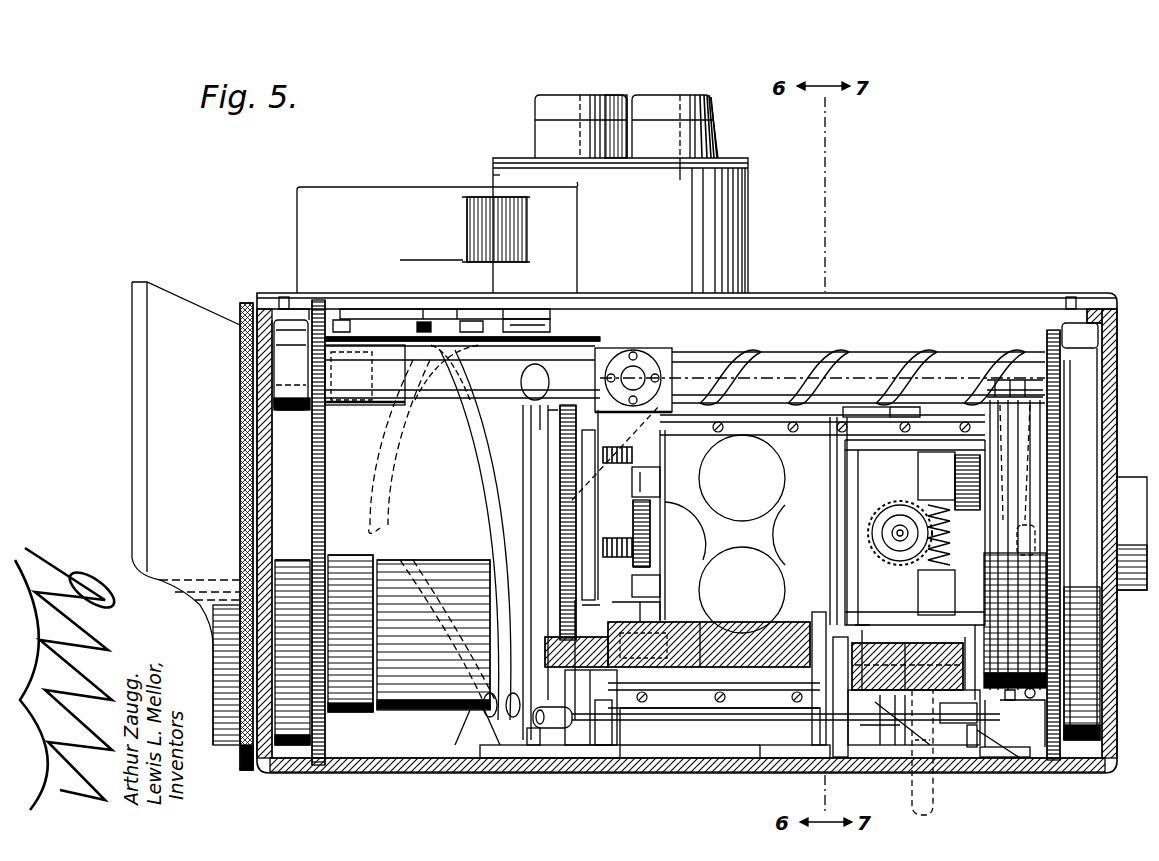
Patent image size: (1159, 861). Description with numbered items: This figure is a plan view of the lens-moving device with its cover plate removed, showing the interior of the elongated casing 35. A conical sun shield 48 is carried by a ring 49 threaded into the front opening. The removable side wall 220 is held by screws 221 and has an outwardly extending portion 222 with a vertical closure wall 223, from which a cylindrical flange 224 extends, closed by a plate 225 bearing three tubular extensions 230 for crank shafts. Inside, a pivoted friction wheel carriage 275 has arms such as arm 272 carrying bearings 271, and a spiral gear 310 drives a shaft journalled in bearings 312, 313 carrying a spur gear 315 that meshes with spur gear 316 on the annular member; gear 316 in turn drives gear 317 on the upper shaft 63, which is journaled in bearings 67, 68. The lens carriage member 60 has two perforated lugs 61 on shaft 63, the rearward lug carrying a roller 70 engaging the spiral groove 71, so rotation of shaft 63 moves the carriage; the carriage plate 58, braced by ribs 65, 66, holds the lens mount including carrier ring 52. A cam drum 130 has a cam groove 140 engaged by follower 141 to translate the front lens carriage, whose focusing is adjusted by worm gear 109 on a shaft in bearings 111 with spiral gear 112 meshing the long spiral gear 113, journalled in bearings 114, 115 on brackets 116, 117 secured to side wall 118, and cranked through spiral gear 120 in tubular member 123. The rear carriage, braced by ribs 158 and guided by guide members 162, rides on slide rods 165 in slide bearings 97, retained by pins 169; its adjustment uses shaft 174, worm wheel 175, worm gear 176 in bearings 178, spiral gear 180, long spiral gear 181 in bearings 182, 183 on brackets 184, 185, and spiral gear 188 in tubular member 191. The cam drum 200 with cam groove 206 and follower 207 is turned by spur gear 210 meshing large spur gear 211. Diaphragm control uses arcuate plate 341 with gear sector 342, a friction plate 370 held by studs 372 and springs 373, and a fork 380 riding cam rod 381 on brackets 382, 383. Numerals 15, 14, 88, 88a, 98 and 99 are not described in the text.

The elongated casing 35 is at (1103, 289).
The side wall 220 is at (852, 292).
The screws 221 is at (1088, 295).
The outwardly extending portion 222 is at (750, 247).
The vertical closure wall 223 is at (423, 187).
The cylindrical wall or annular flange 224 is at (493, 172).
The closure plate 225 is at (728, 158).
The tubular extensions 230 is at (706, 135).
The bearing 312 is at (462, 308).
The pivoted friction wheel carriage 275 is at (385, 310).
The bearing 313 is at (376, 308).
The spur gear 315 is at (370, 310).
The spiral gear 310 is at (415, 310).
The arm 272 is at (482, 310).
The bearings 271 is at (536, 310).
The carriage member 60 is at (583, 322).
The conical sun shield 48 is at (153, 476).
The spur gear 316 is at (253, 470).
The ring 49 is at (247, 765).
The bearing 67 is at (285, 412).
The gear 317 is at (310, 377).
The cam drum 130 is at (407, 712).
The perforated lugs 61 is at (668, 368).
The roller 70 is at (650, 347).
The cam groove 140 is at (483, 464).
The cam follower member 141 is at (380, 528).
The lens carrier ring 52 is at (527, 532).
The carriage plate 58 is at (543, 428).
The horizontal rib 65 is at (553, 458).
The upper shaft 63 is at (787, 364).
The spiral groove 71 is at (920, 358).
The cylindrical slide rods 165 is at (875, 410).
The pins 169 is at (903, 413).
The horizontal rib 66 is at (660, 424).
The arcuate plate 370 is at (655, 440).
The gear sector portion 342 is at (572, 437).
The spring 88 is at (633, 462).
The bearings 111 is at (662, 585).
The worm gear 109 is at (650, 528).
The studs 372 is at (650, 537).
The coil springs 373 is at (650, 557).
The slide bearings 97 is at (740, 696).
The hole 98 is at (705, 531).
The hole 99 is at (742, 590).
The arcuate plate 341 is at (699, 573).
The guide members 162 is at (857, 558).
The ribs 158 is at (858, 578).
The worm gear 176 is at (908, 500).
The shaft 174 is at (890, 527).
The worm wheel 175 is at (927, 523).
The bearings 178 is at (928, 582).
The long spiral gear 181 is at (862, 630).
The bearing 182 is at (966, 637).
The section block 15 is at (897, 787).
The follower member 207 is at (1027, 513).
The large spur gear 211 is at (1060, 457).
The bearing 68 is at (1088, 351).
The spur gear 210 is at (1047, 347).
The spiral gear 112 is at (653, 662).
The long spiral gear 113 is at (717, 656).
The spring seat 88a is at (645, 607).
The section line 14 is at (602, 786).
The tubular member 123 is at (617, 733).
The spiral gear 120 is at (558, 665).
The fork member 380 is at (600, 737).
The bracket 117 is at (530, 732).
The bracket 382 is at (543, 745).
The cam rod 381 is at (687, 722).
The side wall 118 is at (693, 770).
The bracket 116 is at (815, 737).
The bearing 114 is at (840, 642).
The bearing 183 is at (835, 623).
The bracket 185 is at (850, 737).
The tubular member 191 is at (875, 702).
The spiral gear 180 is at (928, 752).
The spiral gear 188 is at (910, 815).
The bracket 383 is at (963, 743).
The bracket 184 is at (977, 738).
The cam drum 200 is at (1030, 697).
The cam groove 206 is at (1010, 693).
The bearing 115 is at (470, 710).